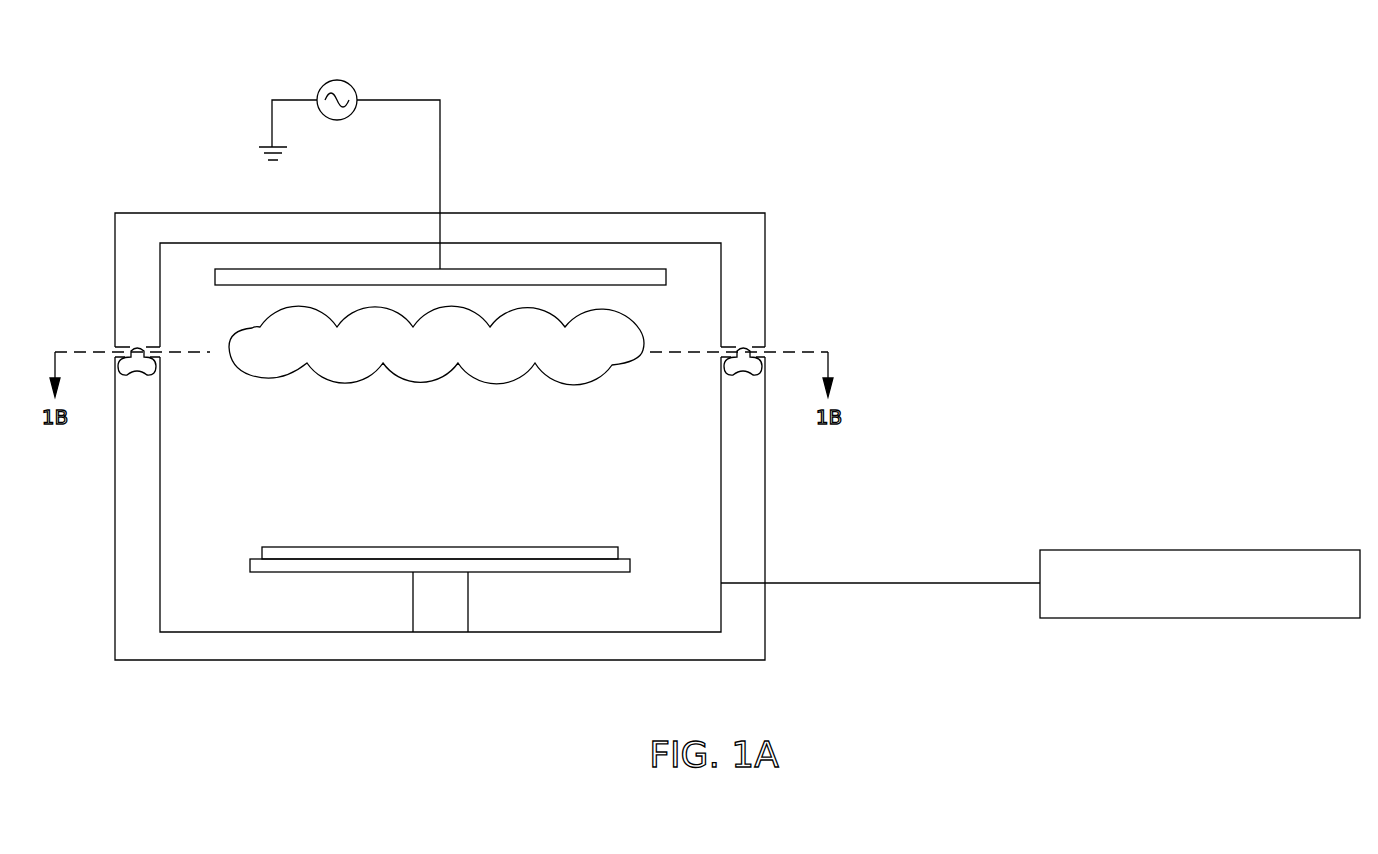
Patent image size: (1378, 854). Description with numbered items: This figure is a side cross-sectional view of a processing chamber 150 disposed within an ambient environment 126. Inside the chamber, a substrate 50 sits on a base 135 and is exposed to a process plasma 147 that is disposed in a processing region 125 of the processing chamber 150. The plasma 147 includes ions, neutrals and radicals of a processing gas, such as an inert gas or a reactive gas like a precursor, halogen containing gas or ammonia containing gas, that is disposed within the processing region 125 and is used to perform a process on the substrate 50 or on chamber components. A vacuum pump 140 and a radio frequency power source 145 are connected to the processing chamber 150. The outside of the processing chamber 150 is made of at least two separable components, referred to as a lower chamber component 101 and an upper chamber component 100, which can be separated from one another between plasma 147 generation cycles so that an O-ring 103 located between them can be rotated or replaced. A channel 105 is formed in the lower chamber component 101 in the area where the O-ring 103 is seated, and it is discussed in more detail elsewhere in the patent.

The substrate 50 is at (568, 547).
The upper chamber component 100 is at (527, 243).
The lower chamber component 101 is at (765, 510).
The O-ring 103 is at (140, 376).
The channel 105 is at (166, 365).
The processing region 125 is at (421, 471).
The ambient environment 126 is at (939, 390).
The base 135 is at (571, 573).
The vacuum pump 140 is at (1178, 598).
The radio frequency (RF) power source 145 is at (340, 80).
The process plasma 147 is at (413, 355).
The processing chamber 150 is at (1057, 102).